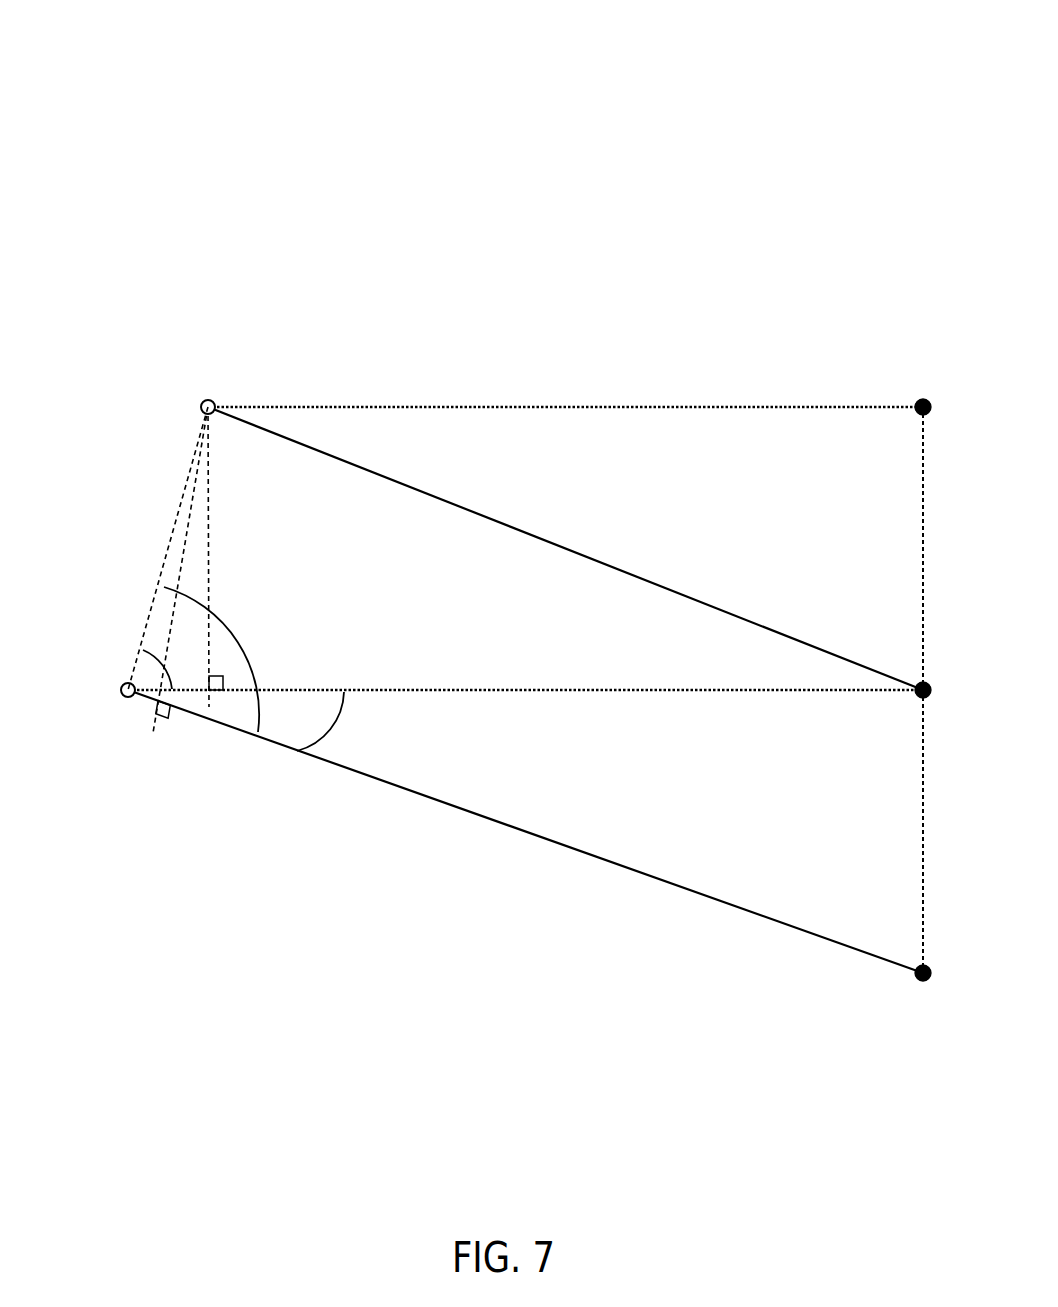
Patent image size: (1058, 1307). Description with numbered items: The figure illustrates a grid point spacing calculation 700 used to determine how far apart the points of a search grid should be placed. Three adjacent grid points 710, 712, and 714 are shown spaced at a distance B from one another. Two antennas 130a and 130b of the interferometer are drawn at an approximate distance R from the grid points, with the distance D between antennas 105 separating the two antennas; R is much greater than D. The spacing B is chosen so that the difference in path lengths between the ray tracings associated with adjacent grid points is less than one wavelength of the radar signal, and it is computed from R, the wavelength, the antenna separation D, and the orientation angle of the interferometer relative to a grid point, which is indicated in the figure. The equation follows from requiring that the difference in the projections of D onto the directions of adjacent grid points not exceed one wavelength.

The grid point spacing calculation 700 is at (484, 50).
The antenna 130a is at (203, 356).
The antenna 130b is at (67, 781).
The distance D between antennas 105 is at (135, 555).
The grid point 710 is at (916, 378).
The grid point 712 is at (868, 773).
The grid point 714 is at (914, 1096).